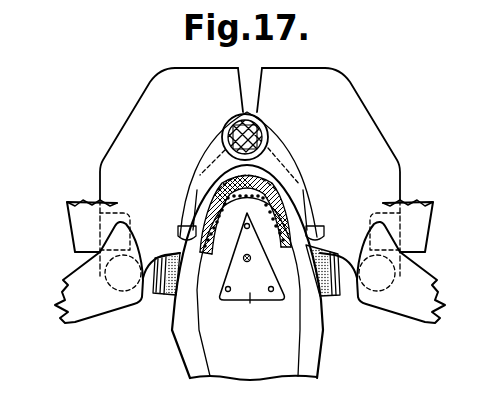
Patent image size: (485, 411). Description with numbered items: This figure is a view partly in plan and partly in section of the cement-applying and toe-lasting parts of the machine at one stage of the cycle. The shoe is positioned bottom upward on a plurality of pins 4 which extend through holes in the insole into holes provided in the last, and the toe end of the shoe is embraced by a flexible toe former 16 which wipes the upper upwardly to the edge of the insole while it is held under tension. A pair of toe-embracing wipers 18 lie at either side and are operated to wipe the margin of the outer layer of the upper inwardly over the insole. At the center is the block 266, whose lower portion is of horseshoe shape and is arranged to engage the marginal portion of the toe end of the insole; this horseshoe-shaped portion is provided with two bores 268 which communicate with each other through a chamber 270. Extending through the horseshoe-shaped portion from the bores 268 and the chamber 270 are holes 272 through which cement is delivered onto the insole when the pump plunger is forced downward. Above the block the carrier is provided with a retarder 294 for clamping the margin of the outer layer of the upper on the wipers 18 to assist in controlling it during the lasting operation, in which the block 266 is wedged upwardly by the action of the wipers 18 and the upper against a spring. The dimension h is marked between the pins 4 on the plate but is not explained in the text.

The toe-embracing wipers 18 is at (150, 97).
The retarder 294 is at (286, 137).
The chamber 270 is at (268, 186).
The holes 272 is at (232, 208).
The bores 268 is at (180, 232).
The block 266 is at (210, 238).
The pins 4 is at (246, 229).
The height dimension h is at (248, 308).
The flexible toe former 16 is at (176, 283).